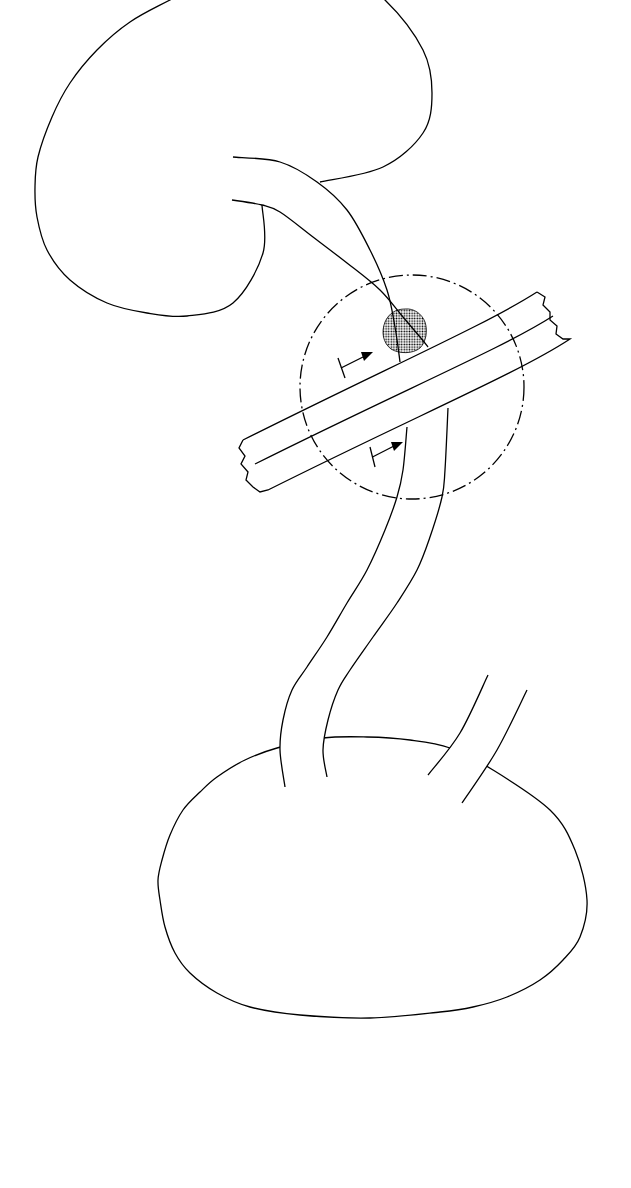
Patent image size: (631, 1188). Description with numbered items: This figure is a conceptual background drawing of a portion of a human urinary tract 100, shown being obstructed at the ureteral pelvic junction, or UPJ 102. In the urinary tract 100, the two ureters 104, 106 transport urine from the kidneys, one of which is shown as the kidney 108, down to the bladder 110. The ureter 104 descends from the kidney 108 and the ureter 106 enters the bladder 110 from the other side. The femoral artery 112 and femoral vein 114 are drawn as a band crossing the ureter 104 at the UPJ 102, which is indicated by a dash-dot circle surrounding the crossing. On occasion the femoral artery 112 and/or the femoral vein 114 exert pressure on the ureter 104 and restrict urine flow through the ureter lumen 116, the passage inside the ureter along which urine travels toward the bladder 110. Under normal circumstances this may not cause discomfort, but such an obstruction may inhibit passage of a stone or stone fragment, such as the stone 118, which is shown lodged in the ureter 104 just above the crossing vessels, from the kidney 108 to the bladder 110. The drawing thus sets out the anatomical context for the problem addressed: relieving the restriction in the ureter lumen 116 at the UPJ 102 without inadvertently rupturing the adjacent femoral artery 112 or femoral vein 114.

The portion of a human urinary tract 100 is at (512, 90).
The UPJ 102 is at (462, 283).
The ureter 104 is at (298, 693).
The ureter 106 is at (497, 743).
The kidney 108 is at (248, 106).
The bladder 110 is at (383, 884).
The femoral artery 112 is at (282, 474).
The femoral vein 114 is at (273, 433).
The ureter lumen 116 is at (355, 238).
The stone 118 is at (425, 324).